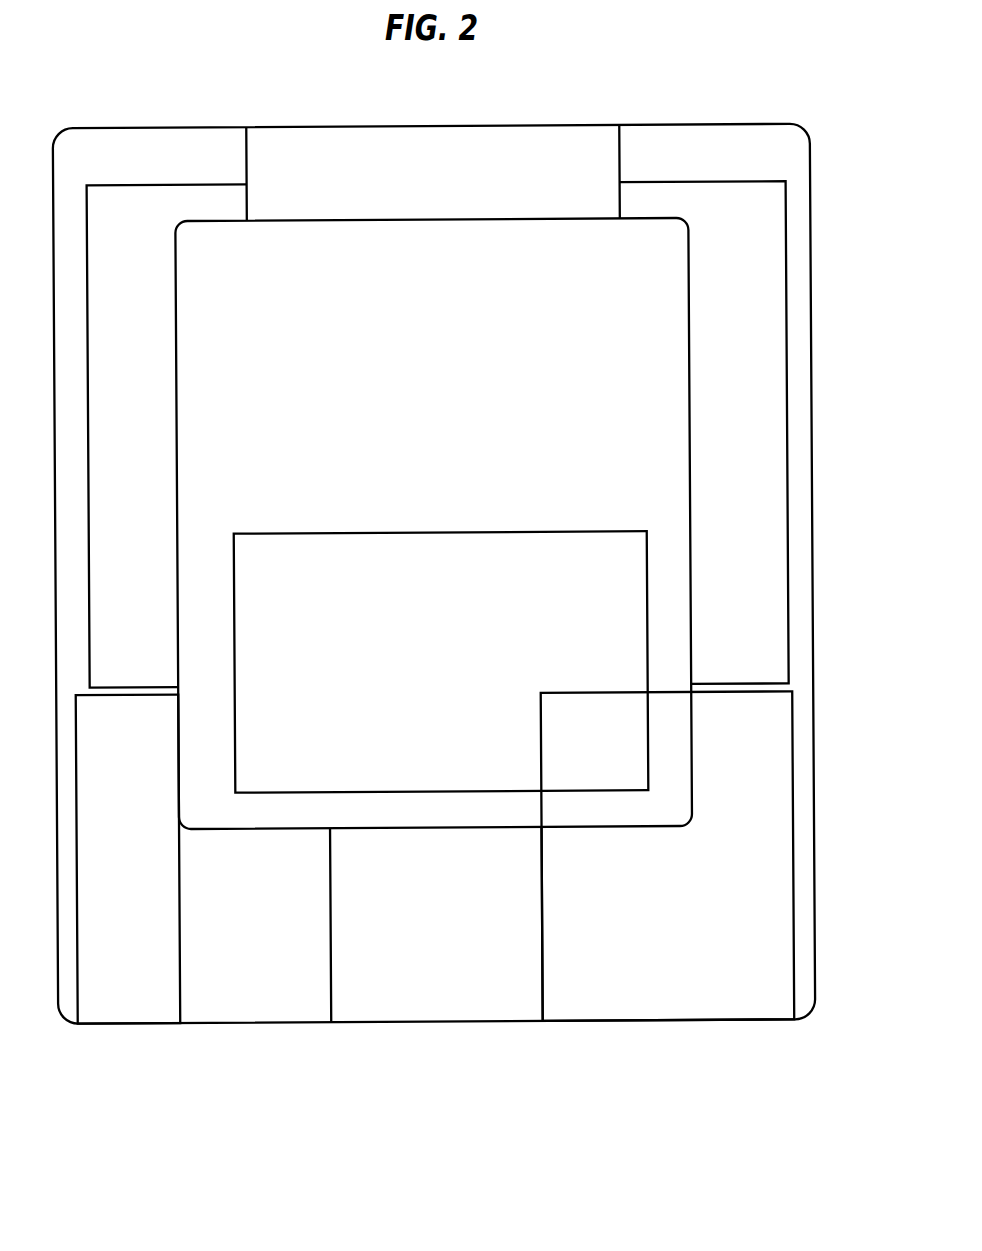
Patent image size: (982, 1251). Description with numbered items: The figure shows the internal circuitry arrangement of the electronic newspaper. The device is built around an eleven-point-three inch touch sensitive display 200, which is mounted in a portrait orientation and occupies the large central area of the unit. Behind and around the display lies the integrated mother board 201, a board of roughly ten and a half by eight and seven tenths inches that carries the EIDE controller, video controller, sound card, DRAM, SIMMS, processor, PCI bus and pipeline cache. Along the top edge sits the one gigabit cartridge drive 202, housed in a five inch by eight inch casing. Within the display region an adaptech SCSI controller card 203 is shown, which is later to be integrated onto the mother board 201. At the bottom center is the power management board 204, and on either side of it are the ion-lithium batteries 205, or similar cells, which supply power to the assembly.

The touch sensitive display 200 is at (445, 416).
The 4-1 integrated mother board 201 is at (765, 475).
The cartridge drive 202 is at (443, 194).
The SCSI controller card 203 is at (447, 678).
The power management board 204 is at (435, 1022).
The ion-lithium battery 205 is at (207, 934).